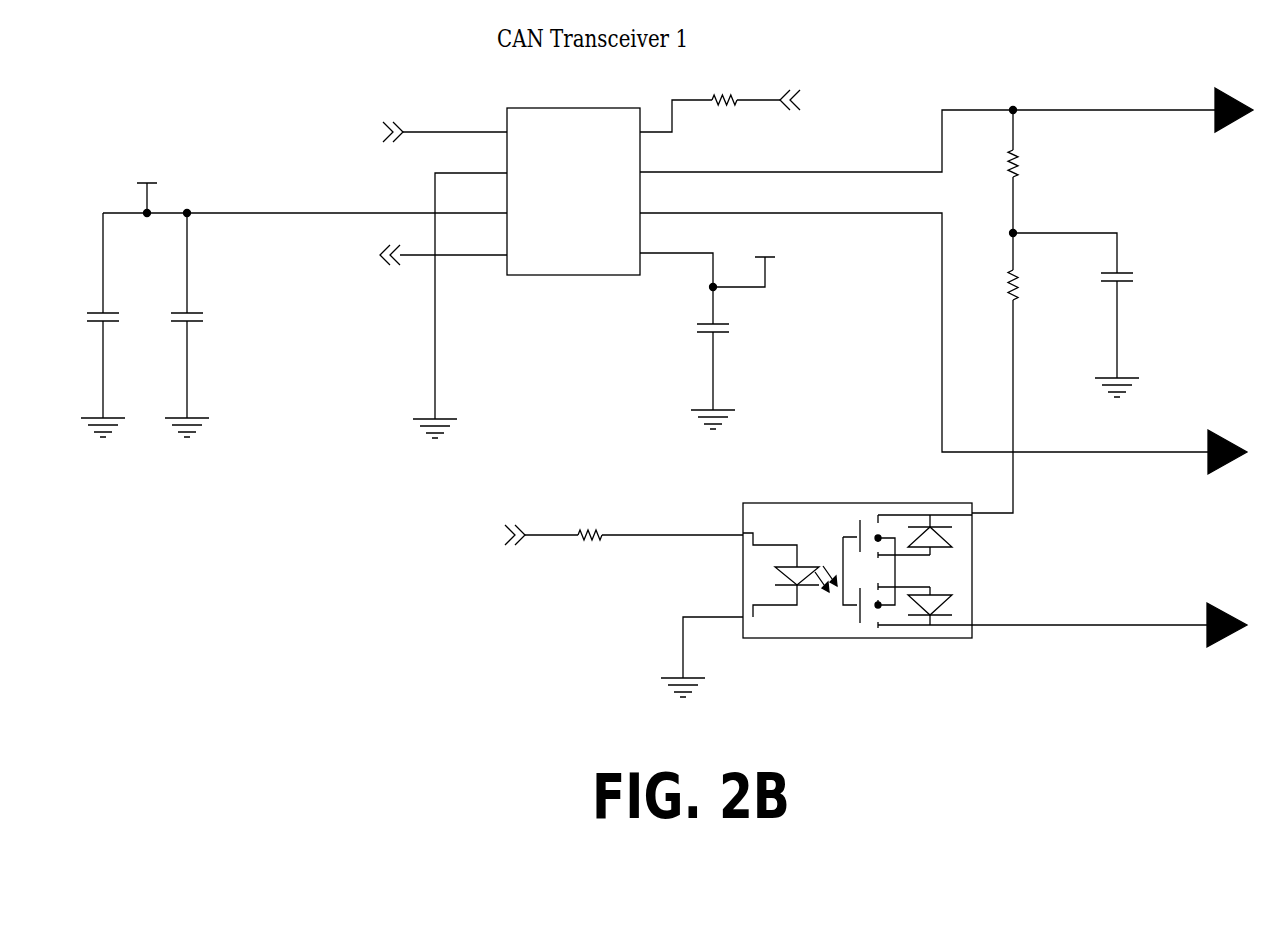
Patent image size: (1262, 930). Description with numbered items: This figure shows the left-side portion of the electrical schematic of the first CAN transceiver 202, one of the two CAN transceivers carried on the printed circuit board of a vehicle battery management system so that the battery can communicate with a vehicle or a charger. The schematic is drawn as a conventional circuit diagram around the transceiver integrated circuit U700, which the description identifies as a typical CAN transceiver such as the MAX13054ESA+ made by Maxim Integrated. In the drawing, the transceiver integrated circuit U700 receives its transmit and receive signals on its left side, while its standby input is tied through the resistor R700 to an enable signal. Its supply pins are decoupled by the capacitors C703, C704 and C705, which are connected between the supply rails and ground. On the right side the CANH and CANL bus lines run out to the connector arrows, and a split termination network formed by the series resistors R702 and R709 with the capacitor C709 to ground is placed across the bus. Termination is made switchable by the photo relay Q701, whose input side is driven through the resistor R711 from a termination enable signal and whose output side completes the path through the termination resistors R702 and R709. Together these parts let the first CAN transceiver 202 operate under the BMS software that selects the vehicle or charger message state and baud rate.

The first CAN transceiver 202 is at (447, 75).
The CAN transceiver IC MAX13054ESA+ U700 is at (573, 194).
The photo-MOS relay TLP176A8 Q701 is at (860, 570).
The standby pull-up resistor 10K R700 is at (720, 121).
The termination resistor 60.4R R702 is at (1032, 181).
The termination resistor 60.4R R709 is at (1032, 301).
The LED series resistor 1K R711 is at (584, 554).
The decoupling capacitor 10uF C703 is at (121, 354).
The decoupling capacitor 100nF C704 is at (207, 354).
The decoupling capacitor 100nF C705 is at (735, 354).
The split termination capacitor 4.7nF C709 is at (1135, 314).